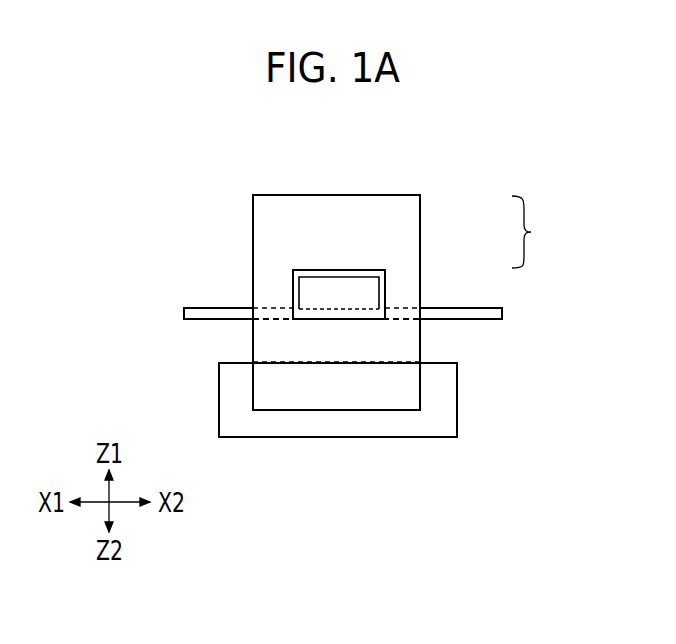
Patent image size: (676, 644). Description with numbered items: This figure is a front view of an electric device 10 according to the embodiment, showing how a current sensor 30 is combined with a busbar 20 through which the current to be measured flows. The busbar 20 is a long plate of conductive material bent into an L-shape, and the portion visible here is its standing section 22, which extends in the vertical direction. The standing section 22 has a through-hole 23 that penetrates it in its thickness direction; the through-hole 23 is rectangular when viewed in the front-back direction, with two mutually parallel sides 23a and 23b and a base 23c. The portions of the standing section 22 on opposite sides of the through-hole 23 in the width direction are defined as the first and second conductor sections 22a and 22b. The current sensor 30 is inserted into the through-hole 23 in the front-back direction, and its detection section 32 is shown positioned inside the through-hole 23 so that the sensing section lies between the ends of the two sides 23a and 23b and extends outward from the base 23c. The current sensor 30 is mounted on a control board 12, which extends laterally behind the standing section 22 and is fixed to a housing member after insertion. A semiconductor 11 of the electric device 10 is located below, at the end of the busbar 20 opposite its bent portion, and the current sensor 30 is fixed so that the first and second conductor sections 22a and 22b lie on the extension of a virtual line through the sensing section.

The electric device 10 is at (531, 232).
The semiconductor 11 is at (449, 405).
The control board 12 is at (497, 318).
The busbar 20 is at (403, 230).
The standing section 22 is at (281, 217).
The first conductor section 22a is at (275, 293).
The second conductor section 22b is at (402, 293).
The through-hole 23 is at (341, 268).
The side of through-hole 23a is at (296, 274).
The side of through-hole 23b is at (372, 287).
The base of through-hole 23c is at (338, 320).
The current sensor 30 is at (386, 271).
The detection section 32 is at (312, 287).